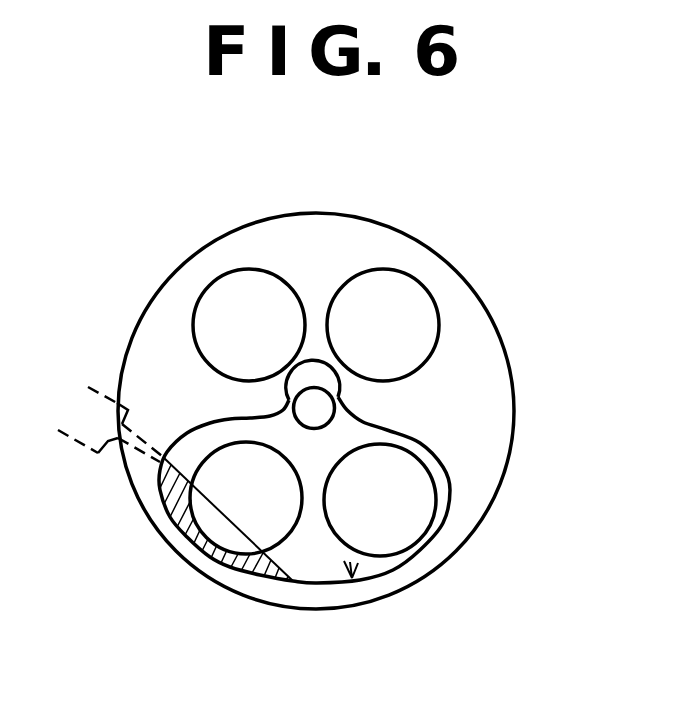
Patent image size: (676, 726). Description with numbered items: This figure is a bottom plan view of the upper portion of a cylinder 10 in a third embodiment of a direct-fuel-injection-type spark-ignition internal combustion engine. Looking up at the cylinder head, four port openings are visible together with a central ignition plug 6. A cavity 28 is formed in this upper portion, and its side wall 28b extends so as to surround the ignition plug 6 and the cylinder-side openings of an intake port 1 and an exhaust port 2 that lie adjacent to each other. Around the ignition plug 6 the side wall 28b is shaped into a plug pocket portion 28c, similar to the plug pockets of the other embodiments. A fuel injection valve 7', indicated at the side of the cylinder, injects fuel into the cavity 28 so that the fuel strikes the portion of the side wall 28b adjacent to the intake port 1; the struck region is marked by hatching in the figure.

The intake port 1 is at (235, 312).
The exhaust port 2 is at (407, 303).
The ignition plug 6 is at (327, 407).
The cylinder 10 is at (510, 463).
The cavity 28 is at (198, 495).
The side wall 28b is at (350, 562).
The plug pocket portion 28c is at (314, 385).
The fuel injection valve 7' is at (172, 484).